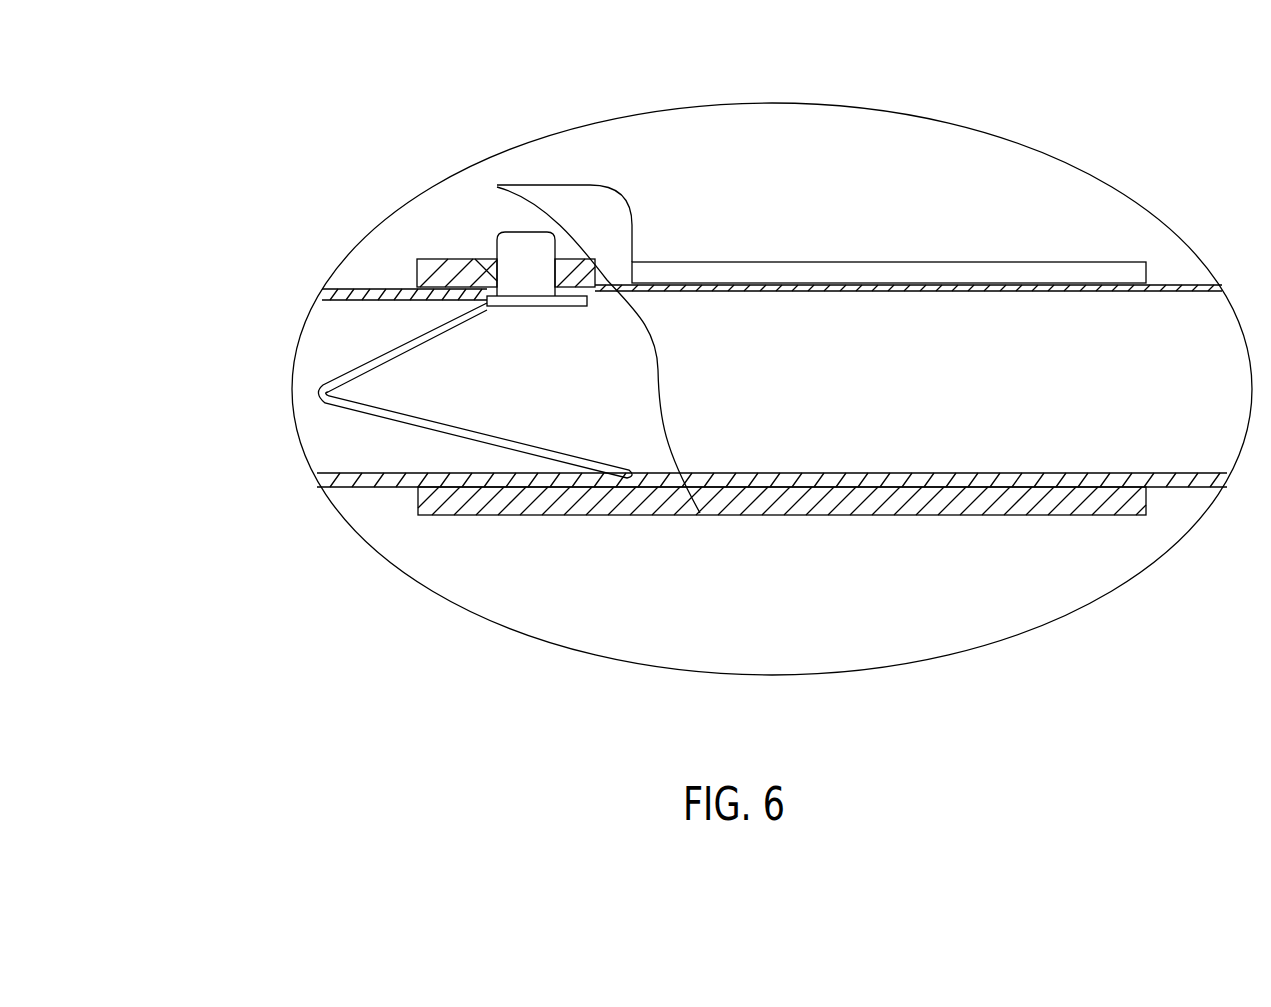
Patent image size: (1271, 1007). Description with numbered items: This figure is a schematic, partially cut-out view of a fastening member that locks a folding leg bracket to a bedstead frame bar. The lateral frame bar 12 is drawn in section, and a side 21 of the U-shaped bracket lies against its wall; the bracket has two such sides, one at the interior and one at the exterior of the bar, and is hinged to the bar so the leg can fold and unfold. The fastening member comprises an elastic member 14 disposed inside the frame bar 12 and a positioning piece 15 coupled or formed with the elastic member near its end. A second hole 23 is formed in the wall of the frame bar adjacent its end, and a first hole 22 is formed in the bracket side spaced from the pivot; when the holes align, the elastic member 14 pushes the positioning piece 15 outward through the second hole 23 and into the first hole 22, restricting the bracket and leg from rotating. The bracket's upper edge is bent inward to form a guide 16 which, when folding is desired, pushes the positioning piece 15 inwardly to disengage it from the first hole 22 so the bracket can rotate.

The lateral frame bar 12 is at (955, 345).
The elastic member 14 is at (500, 437).
The positioning piece 15 is at (518, 247).
The guide 16 is at (608, 223).
The sides 21 is at (463, 500).
The first hole 22 is at (583, 262).
The second hole 23 is at (492, 288).